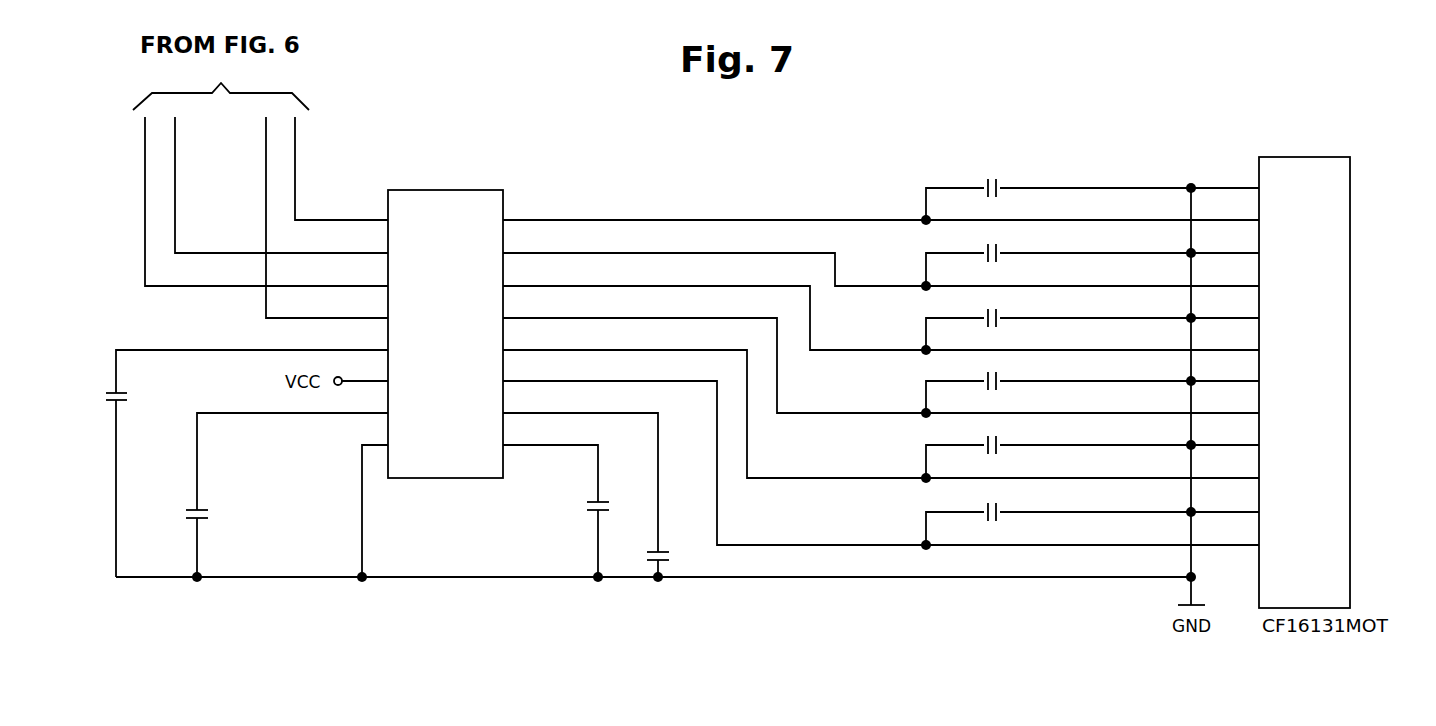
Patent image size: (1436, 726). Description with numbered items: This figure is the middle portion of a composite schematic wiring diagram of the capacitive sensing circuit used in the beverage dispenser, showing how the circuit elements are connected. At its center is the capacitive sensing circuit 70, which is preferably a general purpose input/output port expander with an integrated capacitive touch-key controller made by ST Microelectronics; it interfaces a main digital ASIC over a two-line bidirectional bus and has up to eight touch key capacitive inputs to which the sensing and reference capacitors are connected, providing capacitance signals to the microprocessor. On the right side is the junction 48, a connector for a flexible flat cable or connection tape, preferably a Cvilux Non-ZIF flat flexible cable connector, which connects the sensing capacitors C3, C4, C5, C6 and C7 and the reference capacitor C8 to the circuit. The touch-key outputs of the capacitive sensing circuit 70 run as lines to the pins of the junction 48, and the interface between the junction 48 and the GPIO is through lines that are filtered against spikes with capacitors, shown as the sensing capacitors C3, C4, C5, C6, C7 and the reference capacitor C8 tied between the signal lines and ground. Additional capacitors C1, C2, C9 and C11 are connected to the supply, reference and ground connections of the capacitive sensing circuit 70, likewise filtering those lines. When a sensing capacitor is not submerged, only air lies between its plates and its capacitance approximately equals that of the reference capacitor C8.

The capacitive sensing circuit 70 is at (464, 200).
The junction 48 is at (1292, 170).
The capacitor C1 is at (723, 559).
The capacitor C2 is at (136, 414).
The sensing capacitor C3 is at (1055, 181).
The sensing capacitor C4 is at (1055, 246).
The sensing capacitor C5 is at (1055, 311).
The sensing capacitor C6 is at (1055, 374).
The sensing capacitor C7 is at (1055, 438).
The reference capacitor C8 is at (1055, 505).
The capacitor C9 is at (523, 519).
The capacitor C11 is at (253, 527).